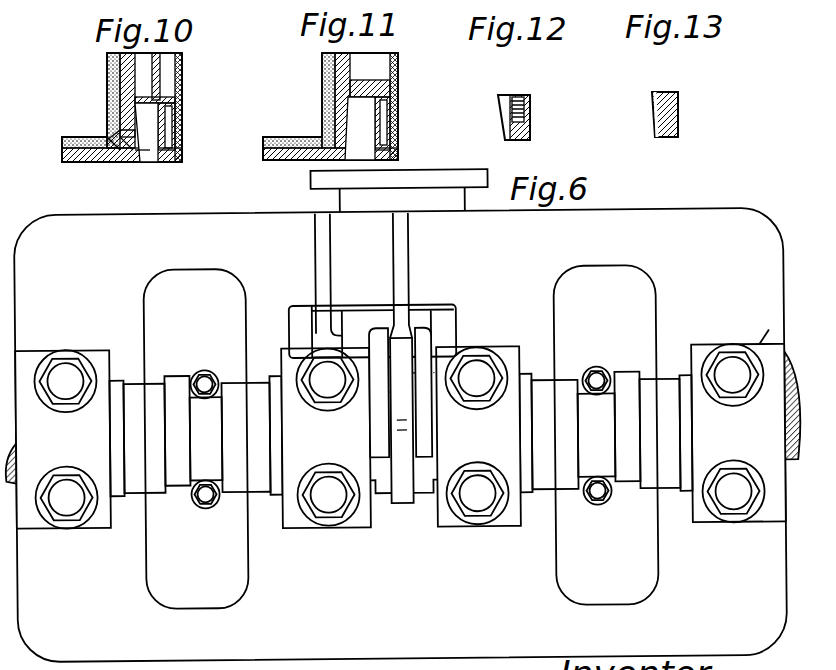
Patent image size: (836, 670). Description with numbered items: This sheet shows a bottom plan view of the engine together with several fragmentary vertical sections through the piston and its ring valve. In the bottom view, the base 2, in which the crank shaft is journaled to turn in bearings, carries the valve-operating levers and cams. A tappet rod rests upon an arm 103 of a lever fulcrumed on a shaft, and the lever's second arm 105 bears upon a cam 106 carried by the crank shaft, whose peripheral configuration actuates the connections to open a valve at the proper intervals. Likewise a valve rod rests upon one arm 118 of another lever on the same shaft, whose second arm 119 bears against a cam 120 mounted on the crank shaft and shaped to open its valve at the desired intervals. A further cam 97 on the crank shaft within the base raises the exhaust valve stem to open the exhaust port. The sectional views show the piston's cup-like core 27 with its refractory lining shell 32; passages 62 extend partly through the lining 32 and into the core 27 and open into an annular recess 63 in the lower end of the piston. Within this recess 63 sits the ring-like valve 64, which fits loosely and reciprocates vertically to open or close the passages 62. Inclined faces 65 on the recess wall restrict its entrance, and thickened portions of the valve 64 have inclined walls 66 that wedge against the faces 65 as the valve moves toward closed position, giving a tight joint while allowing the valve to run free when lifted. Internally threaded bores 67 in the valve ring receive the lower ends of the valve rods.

In FIG. 6, the base 2 is at (738, 212).
In FIG. 10, the cup-like core 27 is at (118, 73).
In FIG. 11, the cup-like core 27 is at (365, 82).
In FIG. 10, the lining shell 32 is at (110, 95).
In FIG. 11, the lining shell 32 is at (320, 83).
In FIG. 10, the passages 62 is at (110, 138).
In FIG. 10, the annular recess 63 is at (148, 120).
In FIG. 11, the annular recess 63 is at (355, 125).
In FIG. 12, the annular valve 64 is at (531, 128).
In FIG. 13, the annular valve 64 is at (678, 118).
In FIG. 10, the inclined faces 65 is at (140, 158).
In FIG. 12, the inclined walls 66 is at (497, 110).
In FIG. 12, the internally threaded bores 67 is at (520, 95).
In FIG. 6, the cam 97 is at (405, 493).
In FIG. 6, the arm 103 is at (322, 263).
In FIG. 6, the second arm 105 is at (380, 430).
In FIG. 6, the cam 106 is at (388, 473).
In FIG. 6, the arm 118 is at (404, 266).
In FIG. 6, the second arm 119 is at (426, 437).
In FIG. 6, the cam 120 is at (429, 473).